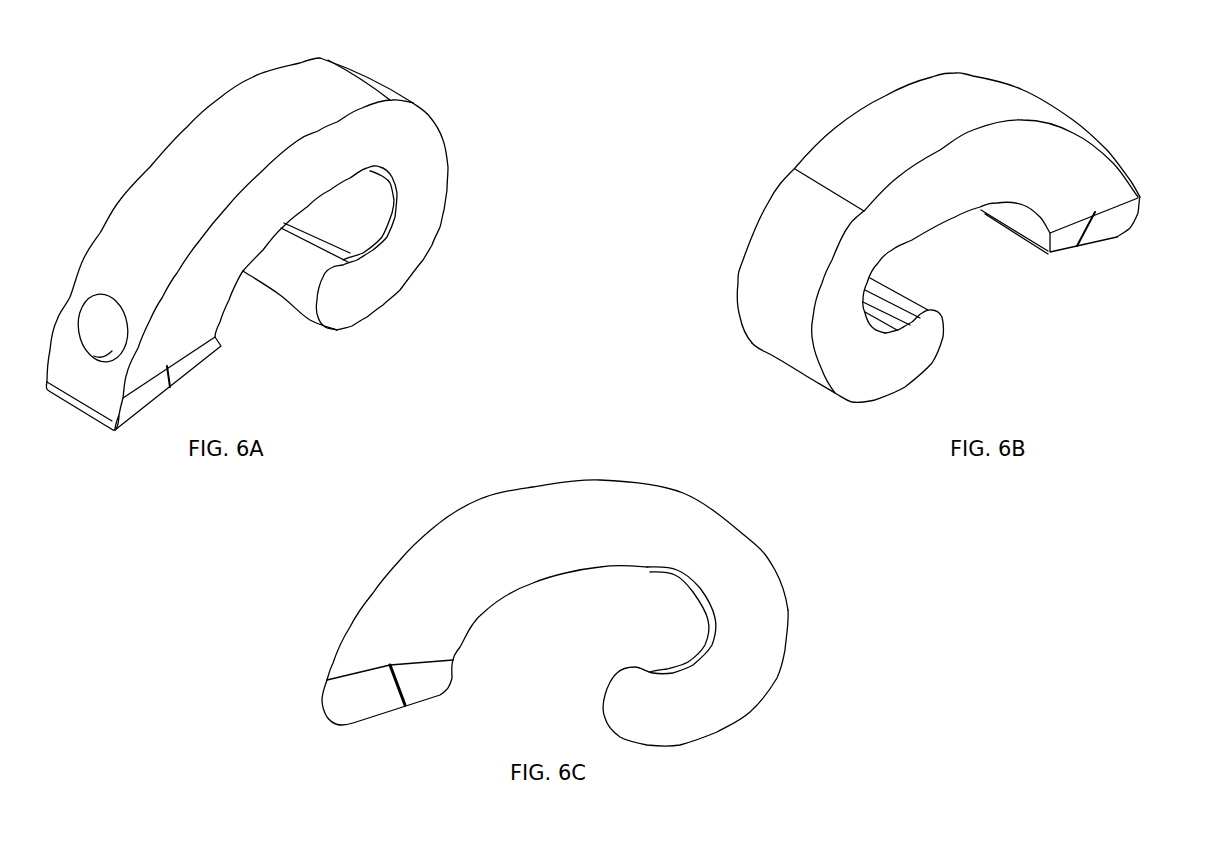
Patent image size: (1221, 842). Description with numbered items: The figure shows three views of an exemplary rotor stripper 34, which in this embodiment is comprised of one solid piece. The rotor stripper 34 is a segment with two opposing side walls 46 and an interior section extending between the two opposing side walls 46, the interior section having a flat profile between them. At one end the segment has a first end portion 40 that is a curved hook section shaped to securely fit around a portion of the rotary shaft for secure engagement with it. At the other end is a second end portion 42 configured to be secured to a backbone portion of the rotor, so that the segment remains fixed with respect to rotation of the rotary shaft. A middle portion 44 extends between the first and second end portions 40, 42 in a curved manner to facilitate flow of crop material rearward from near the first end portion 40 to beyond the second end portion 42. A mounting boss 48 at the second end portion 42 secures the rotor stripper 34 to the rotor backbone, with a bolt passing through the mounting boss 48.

In FIG. 6A, the rotor stripper 34 is at (132, 95).
In FIG. 6B, the rotor stripper 34 is at (808, 120).
In FIG. 6C, the rotor stripper 34 is at (452, 491).
In FIG. 6A, the first end portion 40 is at (441, 226).
In FIG. 6B, the first end portion 40 is at (837, 397).
In FIG. 6C, the first end portion 40 is at (750, 712).
In FIG. 6A, the second end portion 42 is at (75, 375).
In FIG. 6B, the second end portion 42 is at (1117, 152).
In FIG. 6C, the second end portion 42 is at (330, 660).
In FIG. 6A, the middle portion 44 is at (227, 140).
In FIG. 6B, the middle portion 44 is at (920, 121).
In FIG. 6C, the middle portion 44 is at (585, 478).
In FIG. 6A, the opposing side walls 46 is at (236, 247).
In FIG. 6B, the opposing side walls 46 is at (946, 195).
In FIG. 6C, the opposing side walls 46 is at (567, 557).
In FIG. 6A, the mounting boss 48 is at (102, 323).